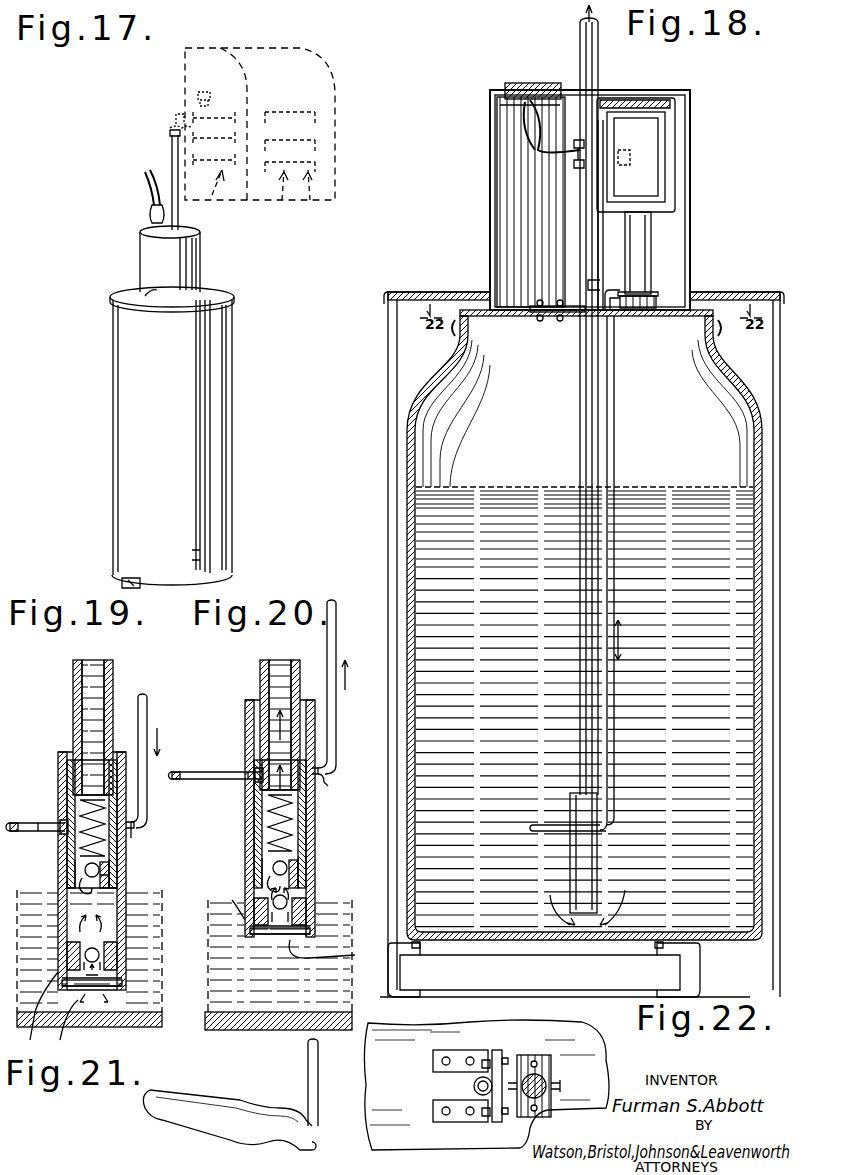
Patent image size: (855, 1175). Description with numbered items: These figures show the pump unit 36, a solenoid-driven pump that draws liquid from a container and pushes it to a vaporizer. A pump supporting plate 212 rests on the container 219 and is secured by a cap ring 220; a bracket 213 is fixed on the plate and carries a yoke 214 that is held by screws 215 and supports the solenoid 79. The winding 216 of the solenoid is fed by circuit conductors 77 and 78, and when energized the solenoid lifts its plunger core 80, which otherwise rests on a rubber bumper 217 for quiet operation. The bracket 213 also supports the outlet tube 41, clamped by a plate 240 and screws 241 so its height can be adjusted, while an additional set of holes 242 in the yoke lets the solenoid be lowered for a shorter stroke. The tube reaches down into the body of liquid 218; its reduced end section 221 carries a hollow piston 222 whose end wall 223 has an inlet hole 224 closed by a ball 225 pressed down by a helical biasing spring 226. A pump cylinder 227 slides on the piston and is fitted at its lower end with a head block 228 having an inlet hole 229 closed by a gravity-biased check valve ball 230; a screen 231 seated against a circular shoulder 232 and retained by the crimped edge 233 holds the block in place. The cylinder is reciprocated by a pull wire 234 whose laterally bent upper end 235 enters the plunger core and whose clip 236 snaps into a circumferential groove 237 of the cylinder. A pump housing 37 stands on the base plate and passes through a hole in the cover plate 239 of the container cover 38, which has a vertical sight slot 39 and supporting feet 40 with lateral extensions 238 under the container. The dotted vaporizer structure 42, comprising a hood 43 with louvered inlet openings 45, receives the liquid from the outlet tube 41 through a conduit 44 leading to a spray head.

In FIG. 17, the pump unit 36 is at (204, 270).
In FIG. 18, the pump unit 36 is at (692, 258).
In FIG. 17, the pump housing 37 is at (205, 240).
In FIG. 18, the pump housing 37 is at (494, 208).
In FIG. 17, the cover 38 is at (230, 375).
In FIG. 18, the cover 38 is at (390, 516).
In FIG. 17, the vertical sight slot 39 is at (200, 425).
In FIG. 17, the supporting feet 40 is at (122, 580).
In FIG. 18, the supporting feet 40 is at (398, 985).
In FIG. 17, the outlet tube 41 is at (180, 215).
In FIG. 18, the outlet tube 41 is at (578, 40).
In FIG. 19, the outlet tube 41 is at (72, 672).
In FIG. 20, the outlet tube 41 is at (258, 672).
In FIG. 22, the outlet tube 41 is at (476, 1092).
In FIG. 17, the housing cover 42 is at (340, 95).
In FIG. 17, the hood 43 is at (335, 138).
In FIG. 17, the conduit 44 is at (190, 115).
In FIG. 17, the louvered inlet openings 45 is at (218, 122).
In FIG. 17, the circuit conductor 77 is at (145, 175).
In FIG. 18, the circuit conductor 77 is at (520, 125).
In FIG. 17, the circuit conductor 78 is at (150, 172).
In FIG. 18, the circuit conductor 78 is at (540, 118).
In FIG. 18, the solenoid 79 is at (665, 160).
In FIG. 18, the plunger core 80 is at (652, 235).
In FIG. 22, the plunger core 80 is at (545, 1080).
In FIG. 18, the pump supporting plate 212 is at (655, 318).
In FIG. 22, the pump supporting plate 212 is at (410, 1093).
In FIG. 18, the bracket 213 is at (560, 285).
In FIG. 22, the bracket 213 is at (460, 1050).
In FIG. 18, the yoke 214 is at (676, 135).
In FIG. 18, the screws 215 is at (575, 144).
In FIG. 18, the winding 216 is at (650, 185).
In FIG. 18, the bumper 217 is at (665, 305).
In FIG. 22, the bumper 217 is at (548, 1065).
In FIG. 18, the body of liquid 218 is at (660, 495).
In FIG. 19, the body of liquid 218 is at (150, 985).
In FIG. 20, the body of liquid 218 is at (280, 956).
In FIG. 18, the container 219 is at (405, 465).
In FIG. 19, the container 219 is at (125, 1028).
In FIG. 20, the container 219 is at (232, 1032).
In FIG. 18, the cap ring 220 is at (455, 338).
In FIG. 19, the reduced end section 221 is at (60, 772).
In FIG. 20, the reduced end section 221 is at (248, 790).
In FIG. 19, the hollow piston 222 is at (60, 792).
In FIG. 20, the hollow piston 222 is at (248, 832).
In FIG. 19, the end wall 223 is at (110, 880).
In FIG. 20, the end wall 223 is at (300, 870).
In FIG. 19, the inlet hole 224 is at (82, 885).
In FIG. 20, the inlet hole 224 is at (270, 882).
In FIG. 19, the ball 225 is at (100, 868).
In FIG. 20, the ball 225 is at (287, 862).
In FIG. 19, the helical biasing spring 226 is at (78, 845).
In FIG. 20, the helical biasing spring 226 is at (292, 830).
In FIG. 18, the pump cylinder 227 is at (598, 866).
In FIG. 19, the pump cylinder 227 is at (126, 895).
In FIG. 19, the head block 228 is at (99, 957).
In FIG. 20, the head block 228 is at (287, 905).
In FIG. 19, the inlet hole 229 is at (112, 962).
In FIG. 20, the inlet hole 229 is at (296, 920).
In FIG. 19, the check valve ball 230 is at (103, 947).
In FIG. 20, the check valve ball 230 is at (292, 896).
In FIG. 19, the screen 231 is at (118, 984).
In FIG. 20, the screen 231 is at (305, 940).
In FIG. 19, the circular shoulder 232 is at (32, 1014).
In FIG. 20, the circular shoulder 232 is at (227, 901).
In FIG. 19, the edge 233 is at (84, 1025).
In FIG. 20, the edge 233 is at (337, 952).
In FIG. 18, the pull wire 234 is at (616, 400).
In FIG. 19, the pull wire 234 is at (147, 708).
In FIG. 20, the pull wire 234 is at (338, 625).
In FIG. 21, the pull wire 234 is at (306, 1068).
In FIG. 18, the laterally bent upper end 235 is at (652, 294).
In FIG. 22, the laterally bent upper end 235 is at (560, 1090).
In FIG. 18, the clip 236 is at (548, 830).
In FIG. 19, the clip 236 is at (38, 822).
In FIG. 20, the clip 236 is at (210, 770).
In FIG. 21, the clip 236 is at (222, 1098).
In FIG. 19, the circumferential groove 237 is at (136, 832).
In FIG. 20, the circumferential groove 237 is at (328, 785).
In FIG. 18, the lateral extensions 238 is at (420, 952).
In FIG. 17, the cover plate 239 is at (228, 292).
In FIG. 18, the cover plate 239 is at (432, 278).
In FIG. 17, the clamp plate 240 is at (158, 290).
In FIG. 18, the clamp plate 240 is at (602, 268).
In FIG. 22, the clamp plate 240 is at (498, 1050).
In FIG. 22, the screws 241 is at (482, 1064).
In FIG. 18, the additional set of holes 242 is at (610, 175).